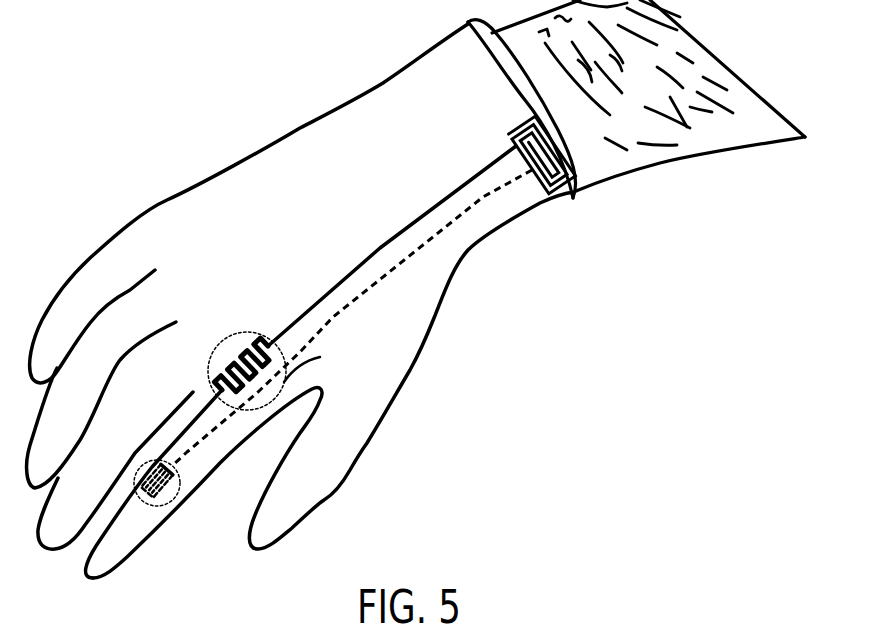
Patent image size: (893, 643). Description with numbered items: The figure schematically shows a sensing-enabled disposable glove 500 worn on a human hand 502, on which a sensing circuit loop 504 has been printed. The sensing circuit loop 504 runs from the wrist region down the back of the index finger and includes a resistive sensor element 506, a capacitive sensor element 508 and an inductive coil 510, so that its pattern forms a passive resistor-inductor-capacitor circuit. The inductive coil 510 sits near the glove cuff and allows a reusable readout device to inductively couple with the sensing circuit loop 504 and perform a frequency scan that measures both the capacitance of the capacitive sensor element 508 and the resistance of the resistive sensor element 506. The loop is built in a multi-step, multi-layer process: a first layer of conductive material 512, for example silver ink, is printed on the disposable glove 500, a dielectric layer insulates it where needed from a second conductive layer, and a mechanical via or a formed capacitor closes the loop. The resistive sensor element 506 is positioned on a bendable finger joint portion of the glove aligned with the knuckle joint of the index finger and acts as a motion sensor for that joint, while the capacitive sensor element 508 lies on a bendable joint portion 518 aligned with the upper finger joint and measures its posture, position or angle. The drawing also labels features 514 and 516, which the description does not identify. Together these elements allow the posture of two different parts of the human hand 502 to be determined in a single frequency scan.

The disposable glove 500 is at (210, 173).
The human hand 502 is at (682, 28).
The sensing circuit loop 504 is at (366, 220).
The resistive sensor element 506 is at (218, 371).
The capacitive sensor element 508 is at (145, 470).
The inductive coil 510 is at (522, 108).
The first layer of conductive material 512 is at (344, 309).
The conductive trace 514 is at (334, 293).
The trace segment 516 is at (319, 365).
The bendable joint portion 518 is at (180, 479).